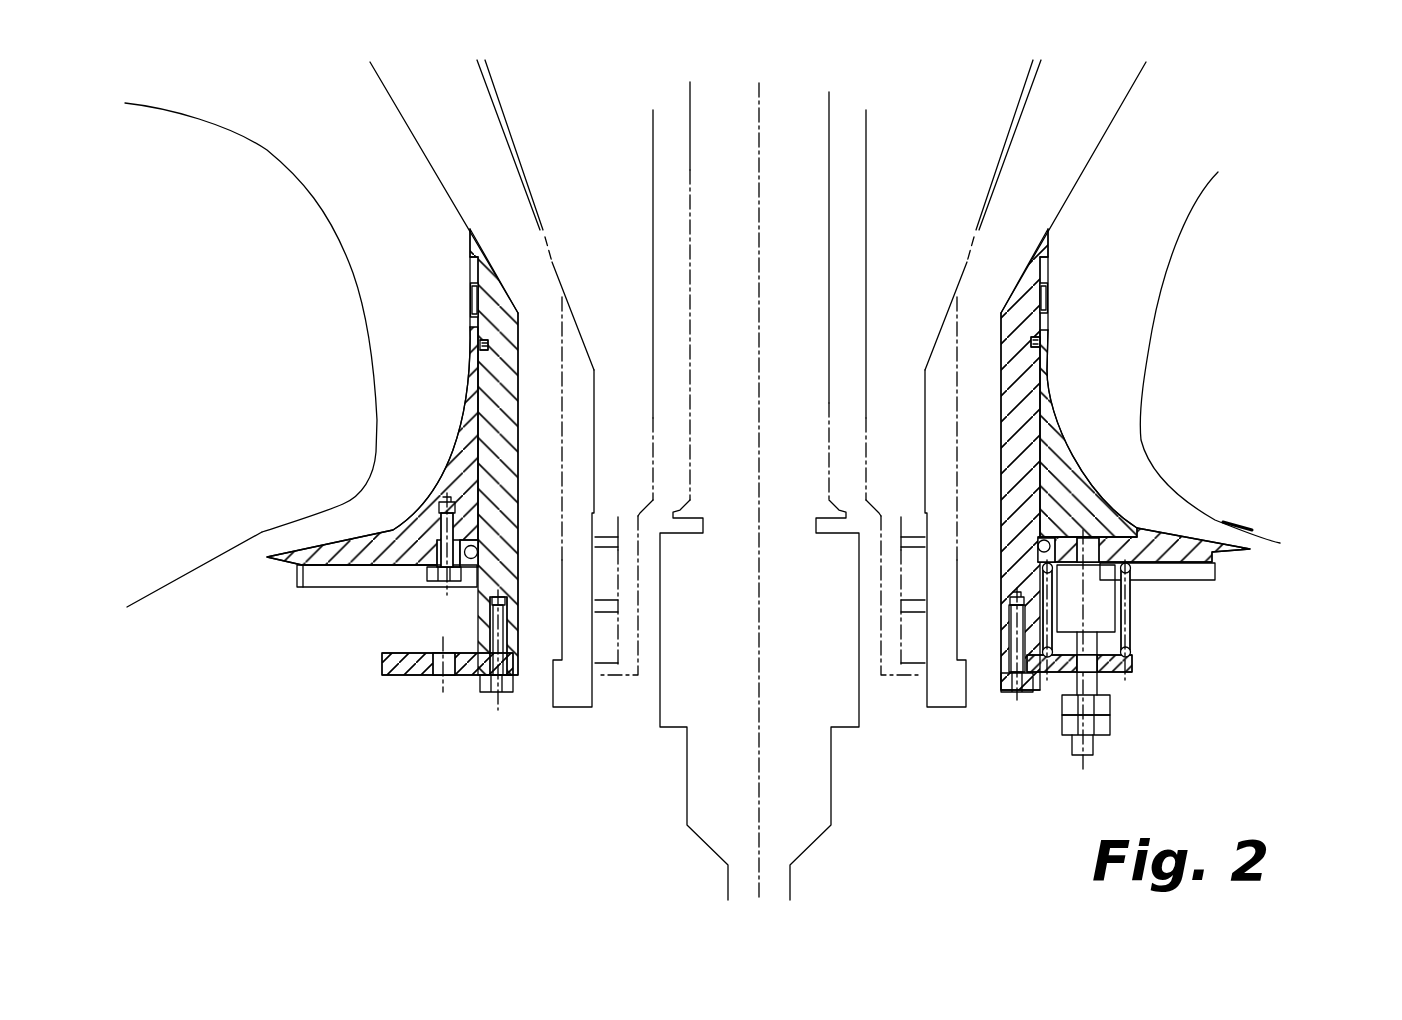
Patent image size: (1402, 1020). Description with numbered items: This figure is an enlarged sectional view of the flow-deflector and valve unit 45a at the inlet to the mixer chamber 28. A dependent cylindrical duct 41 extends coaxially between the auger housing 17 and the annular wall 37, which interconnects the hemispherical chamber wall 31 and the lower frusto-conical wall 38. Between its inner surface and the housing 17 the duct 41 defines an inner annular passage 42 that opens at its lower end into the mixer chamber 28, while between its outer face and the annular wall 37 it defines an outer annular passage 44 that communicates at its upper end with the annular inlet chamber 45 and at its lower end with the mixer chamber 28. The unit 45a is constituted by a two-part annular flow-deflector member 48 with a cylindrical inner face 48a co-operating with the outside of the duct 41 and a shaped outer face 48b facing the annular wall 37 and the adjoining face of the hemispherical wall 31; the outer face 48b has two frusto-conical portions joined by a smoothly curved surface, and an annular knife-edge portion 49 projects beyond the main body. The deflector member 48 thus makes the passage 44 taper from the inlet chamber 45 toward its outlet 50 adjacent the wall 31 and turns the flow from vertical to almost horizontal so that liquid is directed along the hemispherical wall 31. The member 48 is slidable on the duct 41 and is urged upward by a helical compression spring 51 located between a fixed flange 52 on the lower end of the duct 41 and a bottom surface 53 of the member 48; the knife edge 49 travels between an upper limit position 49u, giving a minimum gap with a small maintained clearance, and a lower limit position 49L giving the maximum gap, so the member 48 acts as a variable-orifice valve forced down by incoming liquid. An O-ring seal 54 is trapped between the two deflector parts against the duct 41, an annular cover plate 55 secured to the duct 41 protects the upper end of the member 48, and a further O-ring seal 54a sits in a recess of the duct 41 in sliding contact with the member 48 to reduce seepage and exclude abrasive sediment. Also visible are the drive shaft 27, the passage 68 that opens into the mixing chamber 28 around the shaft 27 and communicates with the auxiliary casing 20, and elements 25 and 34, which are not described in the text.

The auger housing 17 is at (575, 667).
The auxiliary casing 20 is at (632, 620).
The bearing bracket 25 is at (625, 692).
The drive shaft 27 is at (810, 880).
The mixer chamber 28 is at (590, 853).
The hemispherical chamber wall 31 is at (180, 570).
The mounting block 34 is at (503, 570).
The annular wall 37 is at (350, 260).
The frusto-conical wall 38 is at (198, 120).
The cylindrical duct 41 is at (497, 313).
The inner annular passage 42 is at (542, 362).
The outer annular passage 44 is at (398, 349).
The annular chamber 45 is at (305, 137).
The flow-deflector and valve unit 45a is at (378, 640).
The annular flow-deflector member 48 is at (320, 573).
The cylindrical inner face 48a is at (490, 440).
The shaped outer face 48b is at (487, 437).
The annular knife-edge portion 49 is at (293, 517).
The upper travel-limit position 49u is at (1247, 523).
The lower travel-limit position 49L is at (1258, 572).
The outlet 50 is at (260, 550).
The helical compression spring 51 is at (1133, 627).
The fixed flange 52 is at (1120, 672).
The bottom surface 53 is at (1188, 567).
The O-ring seal 54 is at (1042, 543).
The further O-ring seal 54a is at (1043, 343).
The annular cover plate 55 is at (1050, 298).
The passage 68 is at (672, 413).